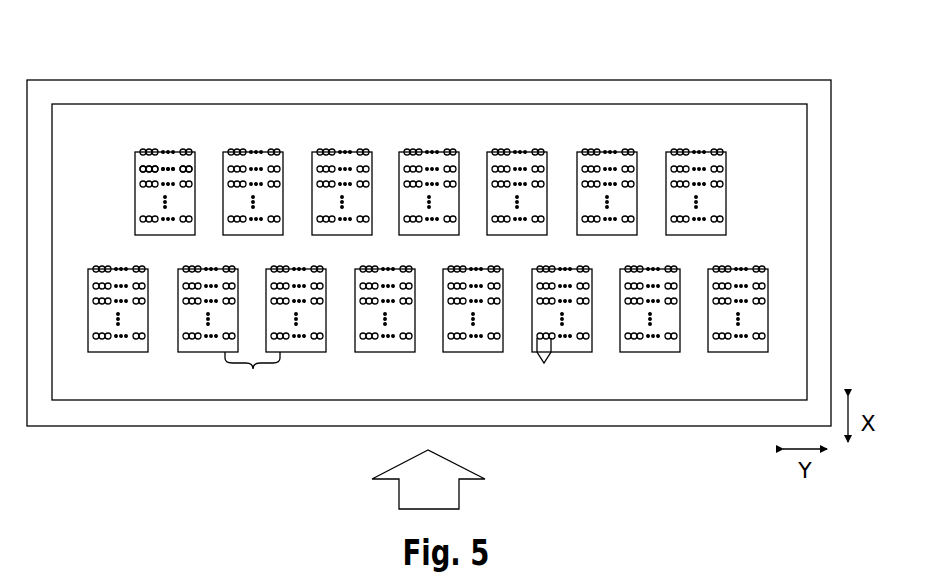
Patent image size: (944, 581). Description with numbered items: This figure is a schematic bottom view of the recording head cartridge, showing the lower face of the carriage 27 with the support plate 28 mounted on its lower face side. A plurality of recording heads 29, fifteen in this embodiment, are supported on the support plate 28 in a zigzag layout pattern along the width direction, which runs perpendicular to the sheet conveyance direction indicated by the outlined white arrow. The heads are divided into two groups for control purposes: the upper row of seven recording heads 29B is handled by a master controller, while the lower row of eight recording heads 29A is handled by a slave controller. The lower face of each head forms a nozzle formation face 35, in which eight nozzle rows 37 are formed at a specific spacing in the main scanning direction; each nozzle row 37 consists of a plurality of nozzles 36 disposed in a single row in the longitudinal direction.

The carriage 27 is at (338, 88).
The support plate 28 is at (94, 117).
The recording heads 29 is at (428, 256).
The recording heads 29A is at (125, 352).
The recording heads 29B is at (172, 152).
The nozzle formation faces 35 is at (252, 375).
The nozzles 36 is at (543, 369).
The nozzle rows 37 is at (132, 216).